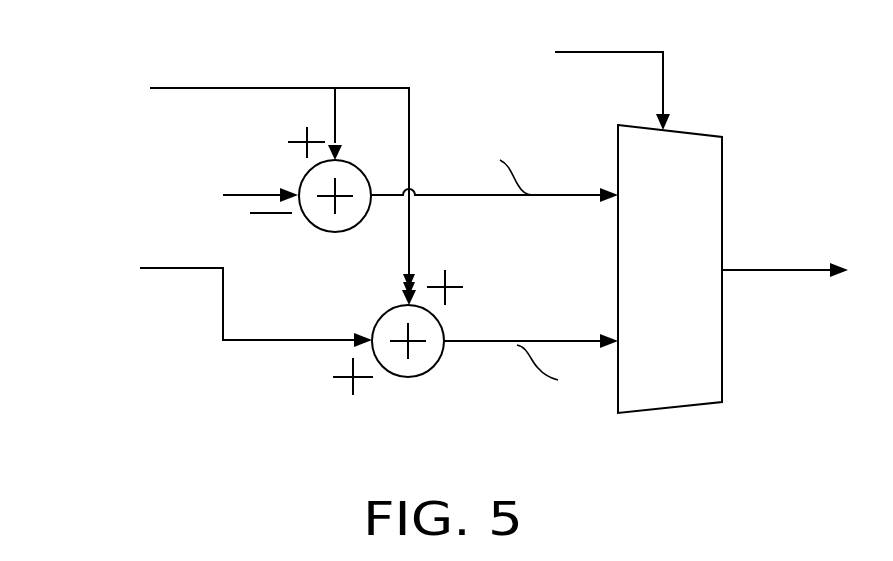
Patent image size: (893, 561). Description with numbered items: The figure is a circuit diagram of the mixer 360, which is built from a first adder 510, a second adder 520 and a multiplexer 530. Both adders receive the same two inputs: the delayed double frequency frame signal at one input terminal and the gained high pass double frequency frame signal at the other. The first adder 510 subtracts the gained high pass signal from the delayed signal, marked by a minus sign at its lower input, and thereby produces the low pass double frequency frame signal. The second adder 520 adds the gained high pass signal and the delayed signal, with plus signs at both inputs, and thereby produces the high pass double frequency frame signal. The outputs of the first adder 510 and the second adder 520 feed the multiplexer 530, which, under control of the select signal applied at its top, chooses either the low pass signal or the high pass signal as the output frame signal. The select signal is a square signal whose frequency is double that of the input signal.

The mixer 360 is at (304, 48).
The first adder 510 is at (297, 177).
The second adder 520 is at (408, 377).
The multiplexer 530 is at (738, 306).